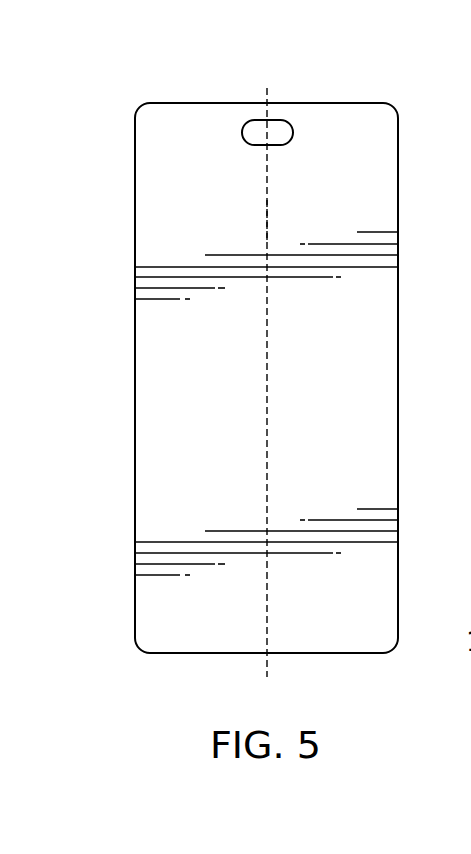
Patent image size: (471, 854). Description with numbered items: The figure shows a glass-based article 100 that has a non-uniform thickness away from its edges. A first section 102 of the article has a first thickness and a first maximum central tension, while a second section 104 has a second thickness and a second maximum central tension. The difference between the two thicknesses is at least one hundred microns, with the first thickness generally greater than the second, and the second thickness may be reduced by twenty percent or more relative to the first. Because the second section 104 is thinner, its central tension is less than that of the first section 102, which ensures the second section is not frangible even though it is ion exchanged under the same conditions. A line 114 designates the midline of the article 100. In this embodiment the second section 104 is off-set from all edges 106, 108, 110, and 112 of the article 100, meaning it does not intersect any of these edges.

The glass-based article 100 is at (191, 63).
The first section 102 is at (165, 345).
The second section 104 is at (275, 129).
The edge 106 is at (135, 503).
The edge 108 is at (400, 460).
The edge 110 is at (352, 120).
The edge 112 is at (200, 656).
The line 114 is at (265, 220).